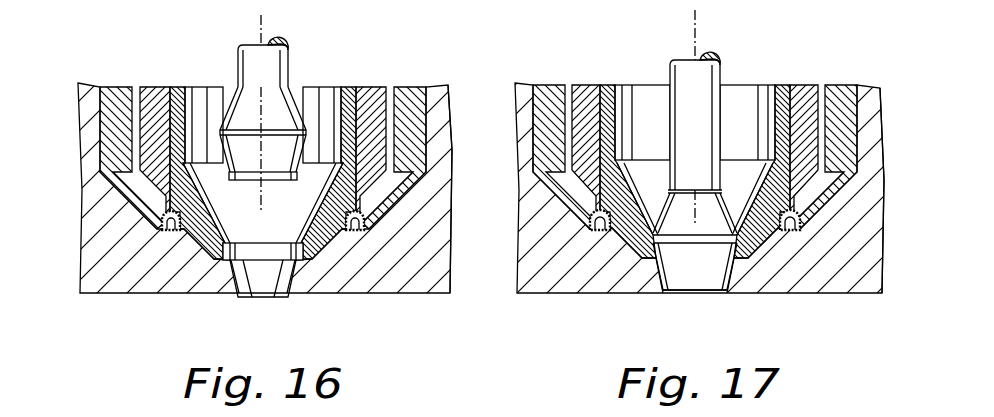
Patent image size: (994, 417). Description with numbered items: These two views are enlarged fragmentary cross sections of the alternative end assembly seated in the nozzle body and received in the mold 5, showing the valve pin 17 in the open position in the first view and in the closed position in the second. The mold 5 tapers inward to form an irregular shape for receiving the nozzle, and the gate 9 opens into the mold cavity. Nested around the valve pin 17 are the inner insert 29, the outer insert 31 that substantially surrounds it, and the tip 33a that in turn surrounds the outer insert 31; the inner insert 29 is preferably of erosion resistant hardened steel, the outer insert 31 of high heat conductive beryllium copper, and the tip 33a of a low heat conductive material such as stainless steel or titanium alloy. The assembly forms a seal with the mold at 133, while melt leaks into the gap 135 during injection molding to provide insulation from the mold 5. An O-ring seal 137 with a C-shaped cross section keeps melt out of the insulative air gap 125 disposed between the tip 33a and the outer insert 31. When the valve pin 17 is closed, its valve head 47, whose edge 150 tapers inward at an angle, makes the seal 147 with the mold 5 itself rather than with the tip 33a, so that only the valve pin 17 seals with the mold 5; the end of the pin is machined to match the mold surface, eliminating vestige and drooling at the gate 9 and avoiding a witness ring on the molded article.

In FIG. 16, the mold 5 is at (173, 283).
In FIG. 17, the mold 5 is at (573, 282).
In FIG. 16, the gate 9 is at (282, 290).
In FIG. 17, the gate 9 is at (720, 280).
In FIG. 16, the valve pin 17 is at (267, 70).
In FIG. 17, the valve pin 17 is at (700, 95).
In FIG. 16, the inner insert 29 is at (350, 92).
In FIG. 17, the inner insert 29 is at (607, 92).
In FIG. 16, the outer insert 31 is at (146, 97).
In FIG. 17, the outer insert 31 is at (575, 92).
In FIG. 16, the tip 33a is at (413, 90).
In FIG. 17, the tip 33a is at (847, 97).
In FIG. 16, the valve head 47 is at (250, 157).
In FIG. 17, the valve head 47 is at (703, 277).
In FIG. 16, the insulative air gap 125 is at (117, 105).
In FIG. 17, the insulative air gap 125 is at (545, 185).
In FIG. 16, the seal with the mold 133 is at (440, 100).
In FIG. 17, the seal with the mold 133 is at (887, 107).
In FIG. 16, the gap 135 is at (397, 213).
In FIG. 17, the gap 135 is at (827, 227).
In FIG. 16, the O-ring seal 137 is at (358, 230).
In FIG. 17, the O-ring seal 137 is at (595, 235).
In FIG. 17, the seal 147 is at (665, 290).
In FIG. 16, the edge of the valve head 150 is at (217, 133).
In FIG. 17, the edge of the valve head 150 is at (745, 228).